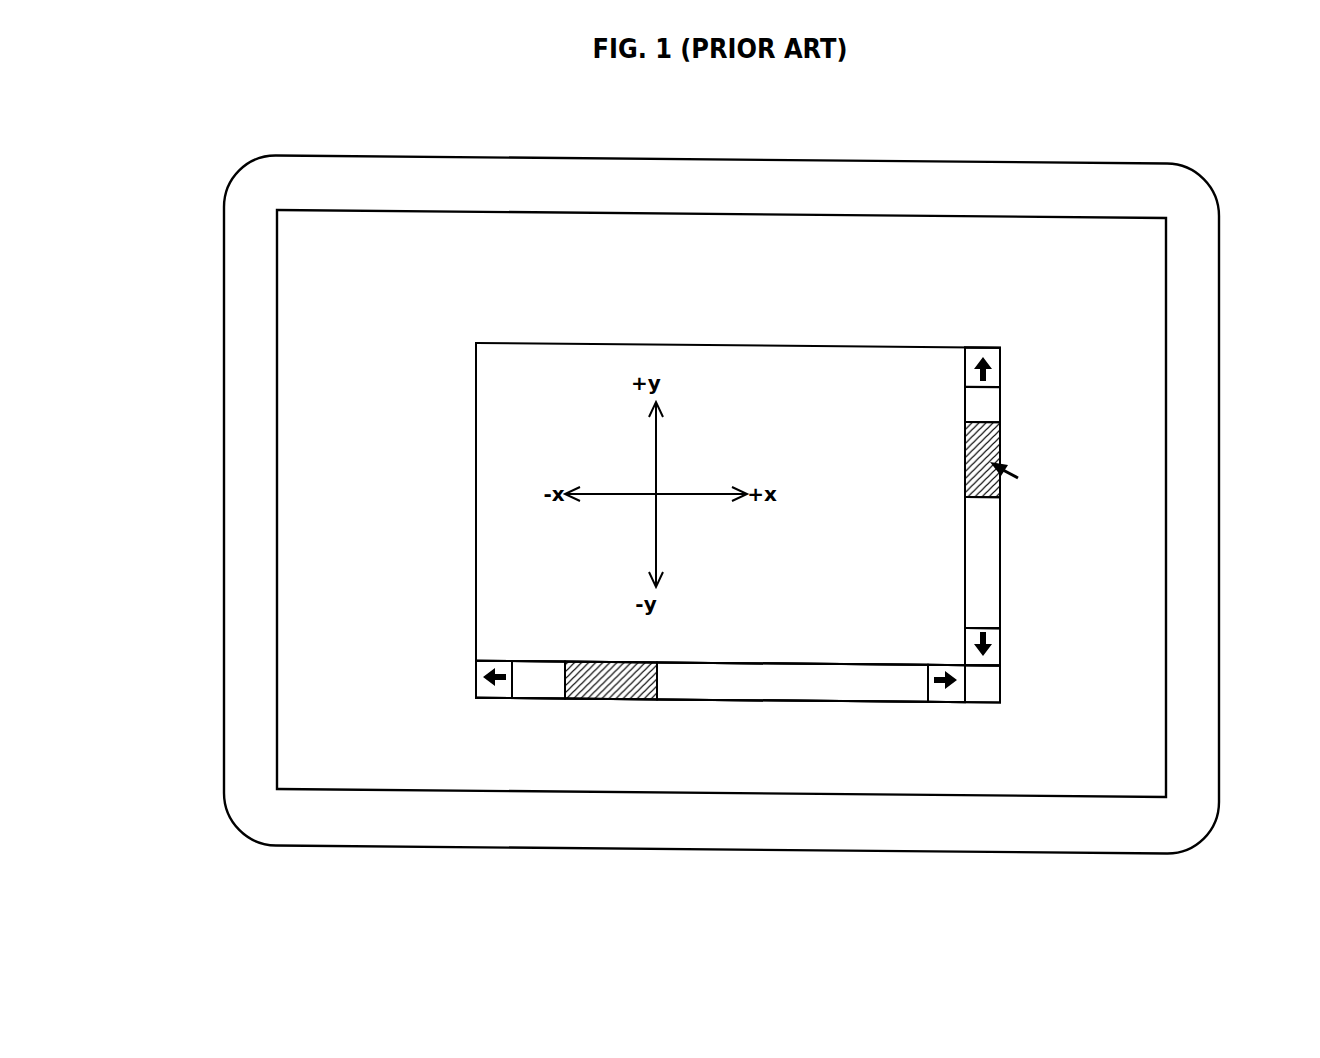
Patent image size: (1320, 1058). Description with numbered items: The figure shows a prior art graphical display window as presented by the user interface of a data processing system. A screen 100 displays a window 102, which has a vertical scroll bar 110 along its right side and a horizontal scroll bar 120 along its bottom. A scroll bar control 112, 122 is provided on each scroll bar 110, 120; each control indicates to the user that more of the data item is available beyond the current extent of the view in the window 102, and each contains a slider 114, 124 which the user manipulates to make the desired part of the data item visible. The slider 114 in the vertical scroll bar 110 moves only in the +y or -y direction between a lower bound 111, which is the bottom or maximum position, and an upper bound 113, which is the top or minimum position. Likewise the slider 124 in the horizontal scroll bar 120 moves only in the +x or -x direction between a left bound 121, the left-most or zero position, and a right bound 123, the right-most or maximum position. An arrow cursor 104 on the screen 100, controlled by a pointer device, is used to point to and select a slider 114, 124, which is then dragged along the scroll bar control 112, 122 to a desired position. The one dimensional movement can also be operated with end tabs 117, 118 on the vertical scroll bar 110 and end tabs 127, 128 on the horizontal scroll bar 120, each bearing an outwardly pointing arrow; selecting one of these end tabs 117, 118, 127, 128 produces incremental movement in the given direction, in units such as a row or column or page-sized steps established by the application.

The screen 100 is at (277, 248).
The window 102 is at (476, 417).
The arrow cursor 104 is at (1018, 478).
The vertical scroll bar 110 is at (1000, 405).
The lower bound 111 is at (965, 628).
The scroll bar control 112 is at (982, 534).
The upper bound 113 is at (1000, 388).
The slider 114 is at (1000, 440).
The end tab 117 is at (985, 650).
The end tab 118 is at (1000, 350).
The horizontal scroll bar 120 is at (728, 700).
The left bound 121 is at (512, 676).
The scroll bar control 122 is at (802, 682).
The right bound 123 is at (926, 688).
The slider 124 is at (607, 683).
The end tab 127 is at (477, 690).
The end tab 128 is at (948, 688).